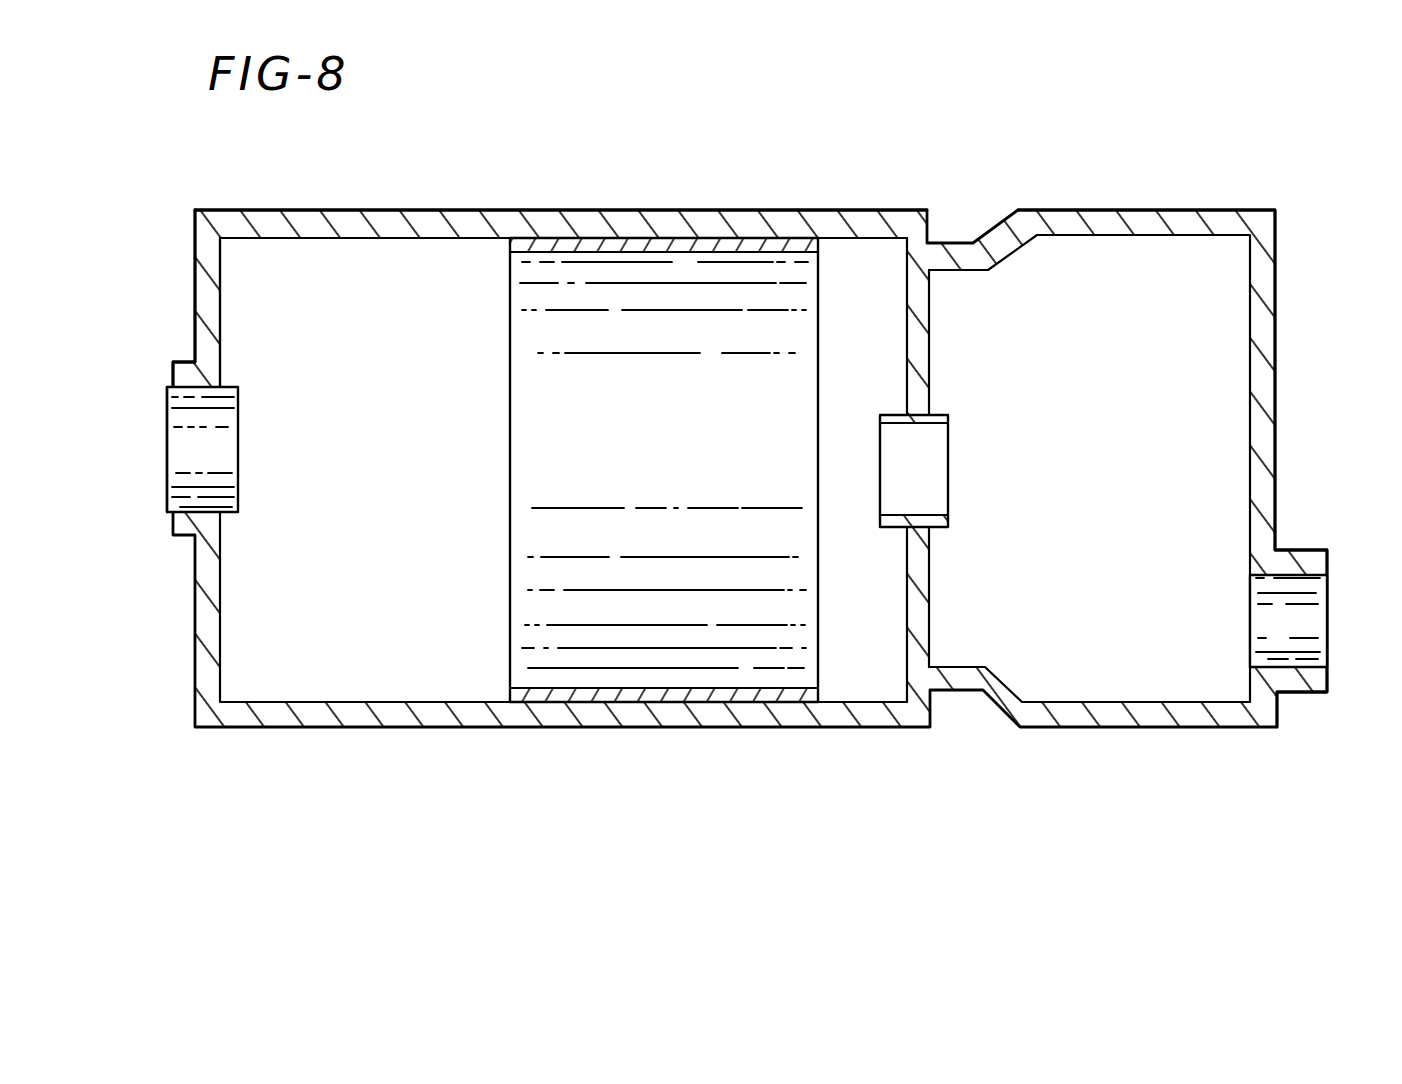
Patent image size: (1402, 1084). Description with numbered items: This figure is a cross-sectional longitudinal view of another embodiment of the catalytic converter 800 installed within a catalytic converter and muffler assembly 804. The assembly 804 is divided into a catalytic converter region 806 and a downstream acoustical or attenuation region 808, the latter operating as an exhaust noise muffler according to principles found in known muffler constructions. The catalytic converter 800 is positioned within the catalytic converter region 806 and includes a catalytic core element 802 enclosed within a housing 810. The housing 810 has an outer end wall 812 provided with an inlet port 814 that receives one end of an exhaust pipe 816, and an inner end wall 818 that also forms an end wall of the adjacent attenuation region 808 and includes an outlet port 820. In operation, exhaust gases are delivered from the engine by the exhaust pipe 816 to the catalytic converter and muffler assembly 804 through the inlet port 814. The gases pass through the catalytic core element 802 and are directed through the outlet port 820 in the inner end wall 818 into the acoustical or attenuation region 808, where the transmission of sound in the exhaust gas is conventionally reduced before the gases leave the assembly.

The catalytic converter 800 is at (506, 318).
The catalytic core element 802 is at (822, 277).
The catalytic converter and muffler assembly 804 is at (433, 770).
The catalytic converter region 806 is at (242, 680).
The acoustical or attenuation region 808 is at (1215, 355).
The housing 810 is at (593, 208).
The outer end wall 812 is at (195, 323).
The inlet port 814 is at (171, 380).
The exhaust pipe 816 is at (164, 487).
The inner end wall 818 is at (929, 322).
The outlet port 820 is at (932, 503).